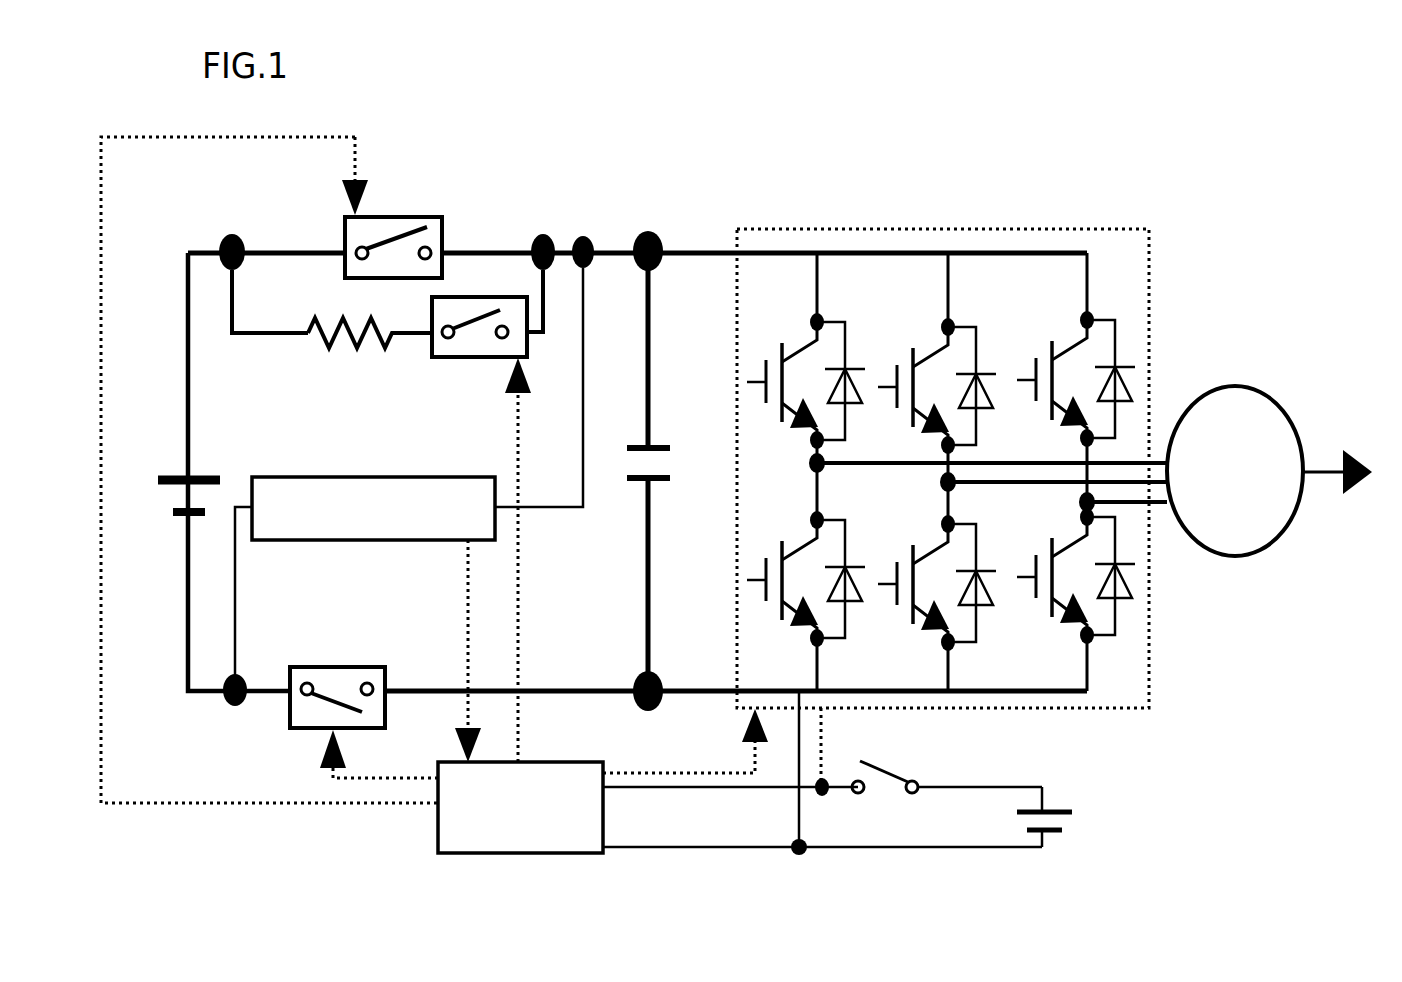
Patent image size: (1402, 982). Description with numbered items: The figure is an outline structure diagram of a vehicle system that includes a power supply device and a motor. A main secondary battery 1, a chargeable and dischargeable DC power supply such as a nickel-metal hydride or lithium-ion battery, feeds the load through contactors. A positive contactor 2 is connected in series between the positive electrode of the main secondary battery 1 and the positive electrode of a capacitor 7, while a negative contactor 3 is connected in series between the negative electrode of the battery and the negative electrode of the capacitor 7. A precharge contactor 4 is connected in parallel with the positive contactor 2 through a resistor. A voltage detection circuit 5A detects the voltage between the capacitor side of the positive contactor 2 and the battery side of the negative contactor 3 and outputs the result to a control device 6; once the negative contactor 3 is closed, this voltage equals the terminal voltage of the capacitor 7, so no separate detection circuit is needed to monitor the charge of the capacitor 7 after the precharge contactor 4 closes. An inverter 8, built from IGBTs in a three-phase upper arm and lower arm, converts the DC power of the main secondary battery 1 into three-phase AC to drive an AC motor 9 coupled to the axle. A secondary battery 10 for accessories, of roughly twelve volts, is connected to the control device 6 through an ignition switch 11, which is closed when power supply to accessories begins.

The main secondary battery 1 is at (178, 472).
The positive contactor 2 is at (412, 217).
The negative contactor 3 is at (285, 715).
The precharge contactor 4 is at (470, 360).
The voltage detection circuit 5A is at (343, 541).
The control device 6 is at (438, 833).
The capacitor 7 is at (635, 432).
The inverter 8 is at (878, 229).
The AC motor 9 is at (1233, 387).
The secondary battery for accessories 10 is at (1078, 820).
The ignition switch 11 is at (897, 762).